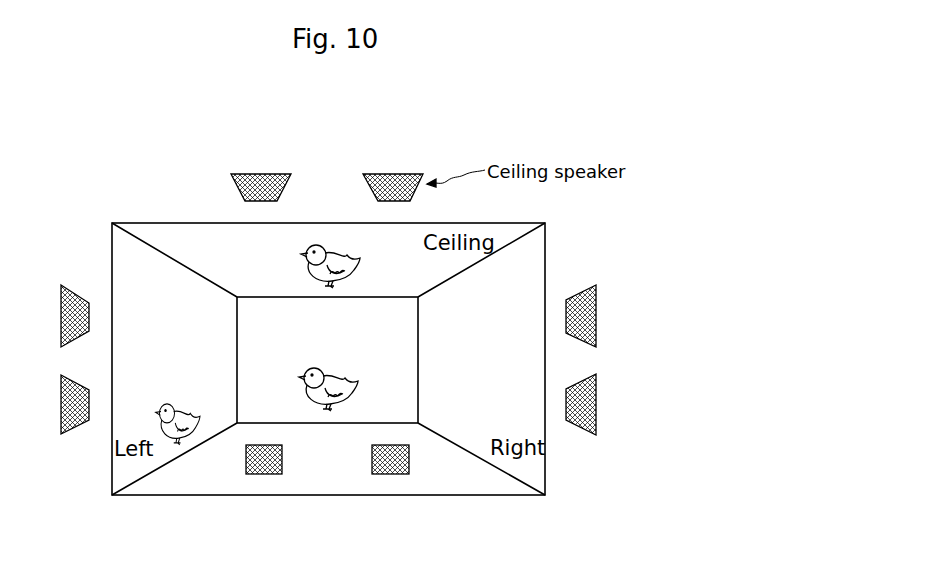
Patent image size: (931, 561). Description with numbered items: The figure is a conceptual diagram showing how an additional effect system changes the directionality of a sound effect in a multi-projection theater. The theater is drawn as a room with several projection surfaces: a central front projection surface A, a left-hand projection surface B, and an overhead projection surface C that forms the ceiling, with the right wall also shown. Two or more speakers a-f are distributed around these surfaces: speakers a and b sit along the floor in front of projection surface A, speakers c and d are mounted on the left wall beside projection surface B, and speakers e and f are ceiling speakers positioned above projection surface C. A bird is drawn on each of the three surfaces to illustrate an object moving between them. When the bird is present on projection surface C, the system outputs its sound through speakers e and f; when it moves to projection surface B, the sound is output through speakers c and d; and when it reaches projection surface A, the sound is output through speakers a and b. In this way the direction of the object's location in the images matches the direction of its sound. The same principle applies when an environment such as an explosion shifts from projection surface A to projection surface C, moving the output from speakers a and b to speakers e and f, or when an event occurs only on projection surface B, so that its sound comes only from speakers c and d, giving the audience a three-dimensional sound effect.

The projection surface A is at (249, 315).
The projection surface B is at (121, 251).
The projection surface C is at (245, 243).
The speaker a is at (264, 471).
The speaker b is at (390, 471).
The speaker c is at (65, 316).
The speaker d is at (65, 404).
The speaker e is at (261, 176).
The speaker f is at (393, 176).